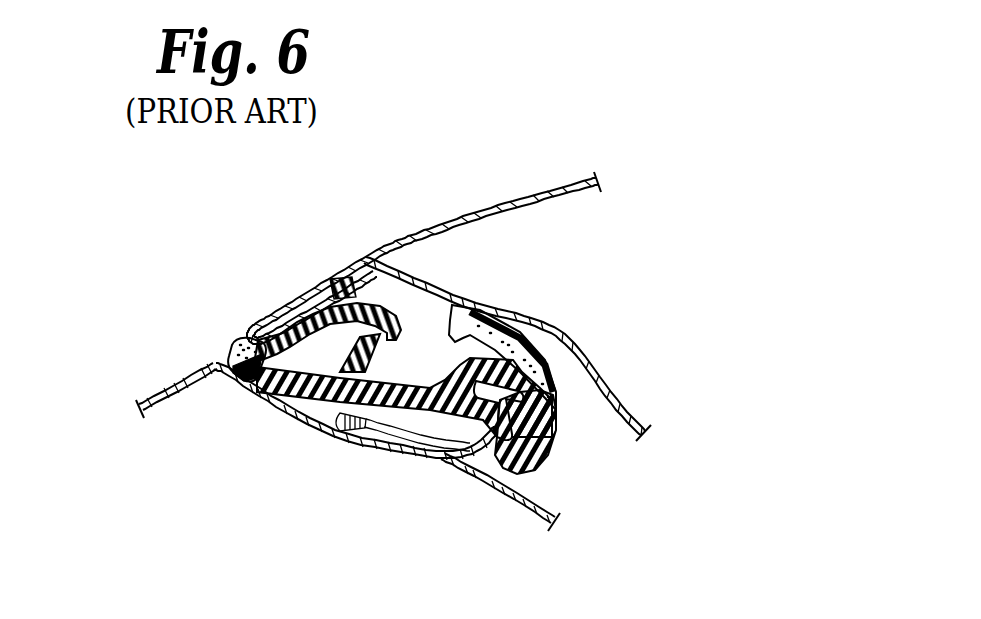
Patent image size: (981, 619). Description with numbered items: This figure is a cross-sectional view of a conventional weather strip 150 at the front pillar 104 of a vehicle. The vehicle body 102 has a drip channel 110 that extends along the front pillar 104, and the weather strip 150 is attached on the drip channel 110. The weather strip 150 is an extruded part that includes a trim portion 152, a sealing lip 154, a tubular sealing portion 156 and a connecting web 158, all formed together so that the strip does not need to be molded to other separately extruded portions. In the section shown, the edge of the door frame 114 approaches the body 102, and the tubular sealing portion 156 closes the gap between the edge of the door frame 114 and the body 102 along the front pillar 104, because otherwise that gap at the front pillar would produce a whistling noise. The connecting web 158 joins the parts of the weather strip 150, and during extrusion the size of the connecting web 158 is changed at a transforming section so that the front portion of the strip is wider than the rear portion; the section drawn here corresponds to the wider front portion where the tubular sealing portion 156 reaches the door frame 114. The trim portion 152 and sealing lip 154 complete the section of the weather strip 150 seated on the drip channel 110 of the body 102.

The vehicle body 102 is at (280, 412).
The front pillar 104 is at (157, 401).
The drip channel 110 is at (483, 459).
The door frame 114 is at (493, 196).
The weather strip 150 is at (368, 290).
The trim portion 152 is at (557, 446).
The sealing lip 154 is at (487, 312).
The tubular sealing portion 156 is at (231, 350).
The connecting web 158 is at (427, 413).